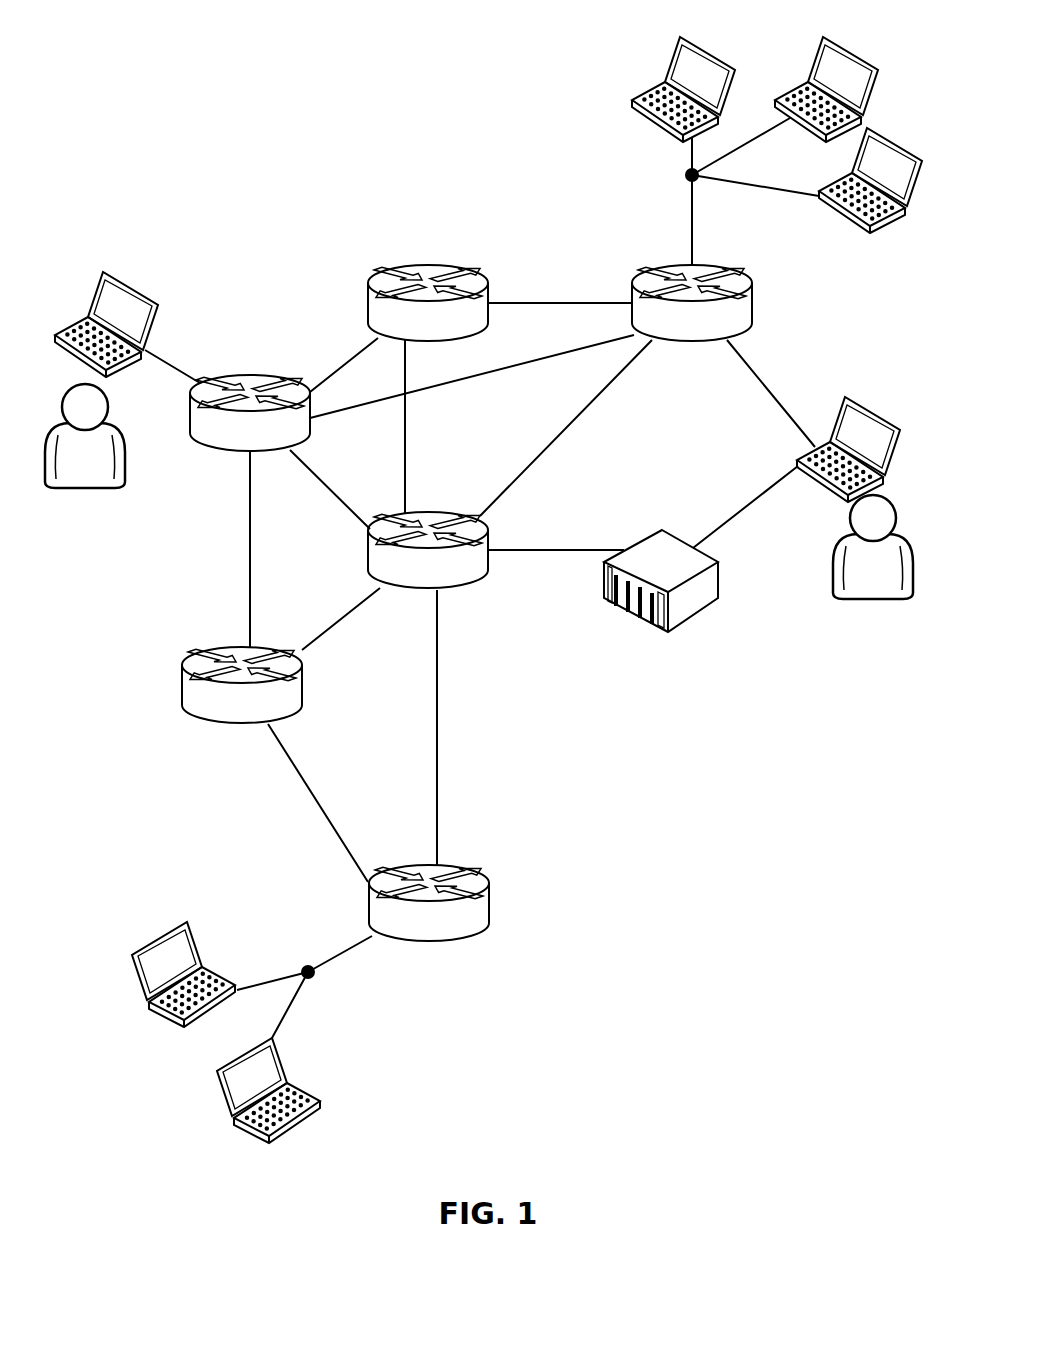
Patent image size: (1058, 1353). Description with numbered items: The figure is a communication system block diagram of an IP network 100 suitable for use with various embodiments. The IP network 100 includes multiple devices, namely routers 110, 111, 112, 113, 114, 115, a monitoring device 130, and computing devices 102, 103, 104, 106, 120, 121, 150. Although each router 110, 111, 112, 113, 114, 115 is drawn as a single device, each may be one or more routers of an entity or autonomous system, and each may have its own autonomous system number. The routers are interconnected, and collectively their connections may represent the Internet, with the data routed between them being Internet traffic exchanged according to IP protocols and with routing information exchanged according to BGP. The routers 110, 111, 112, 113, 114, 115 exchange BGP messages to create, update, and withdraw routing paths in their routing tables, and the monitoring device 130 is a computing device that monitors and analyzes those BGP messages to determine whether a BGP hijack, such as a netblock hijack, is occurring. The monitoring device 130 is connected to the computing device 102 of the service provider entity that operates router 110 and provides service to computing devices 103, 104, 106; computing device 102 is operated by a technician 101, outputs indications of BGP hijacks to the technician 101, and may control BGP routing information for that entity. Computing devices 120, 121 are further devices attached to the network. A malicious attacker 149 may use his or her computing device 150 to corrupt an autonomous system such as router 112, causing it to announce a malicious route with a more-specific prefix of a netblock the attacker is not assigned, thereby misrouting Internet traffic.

The IP network 100 is at (184, 209).
The technician 101 is at (854, 588).
The computing device 102 is at (862, 398).
The computing device 103 is at (710, 48).
The computing device 104 is at (837, 43).
The computing device 106 is at (880, 135).
The router 110 is at (673, 328).
The router 111 is at (409, 328).
The router 112 is at (231, 438).
The router 113 is at (409, 575).
The router 114 is at (223, 710).
The router 115 is at (410, 928).
The computing device 120 is at (152, 941).
The computing device 121 is at (219, 1090).
The monitoring device 130 is at (643, 567).
The malicious attacker 149 is at (66, 477).
The computing device 150 is at (135, 283).